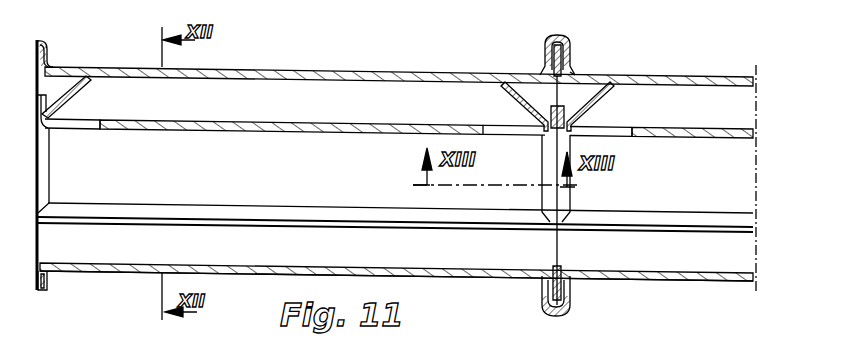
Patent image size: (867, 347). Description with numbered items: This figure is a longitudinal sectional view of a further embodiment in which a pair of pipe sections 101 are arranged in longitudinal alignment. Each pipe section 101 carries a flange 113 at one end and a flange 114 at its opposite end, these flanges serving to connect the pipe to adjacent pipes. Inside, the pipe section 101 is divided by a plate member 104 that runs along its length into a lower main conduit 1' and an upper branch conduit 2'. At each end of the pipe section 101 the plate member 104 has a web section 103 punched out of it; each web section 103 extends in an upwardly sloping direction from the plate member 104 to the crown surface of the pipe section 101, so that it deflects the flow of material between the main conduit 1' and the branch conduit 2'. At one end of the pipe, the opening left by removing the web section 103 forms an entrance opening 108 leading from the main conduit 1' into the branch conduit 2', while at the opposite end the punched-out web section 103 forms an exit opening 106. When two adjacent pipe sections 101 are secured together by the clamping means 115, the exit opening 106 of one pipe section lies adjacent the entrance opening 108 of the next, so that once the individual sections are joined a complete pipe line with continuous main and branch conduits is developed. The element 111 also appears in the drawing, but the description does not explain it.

The branch conduit 2' is at (399, 66).
The plate member 104 is at (216, 130).
The exit opening 106 is at (487, 134).
The entrance opening 108 is at (100, 130).
The web section 103 is at (84, 107).
The flange 114 is at (545, 68).
The clamping means 115 is at (567, 39).
The flange 113 is at (572, 72).
The lower beam 111 is at (98, 262).
The main conduit 1' is at (396, 281).
The pipe section 101 is at (137, 272).